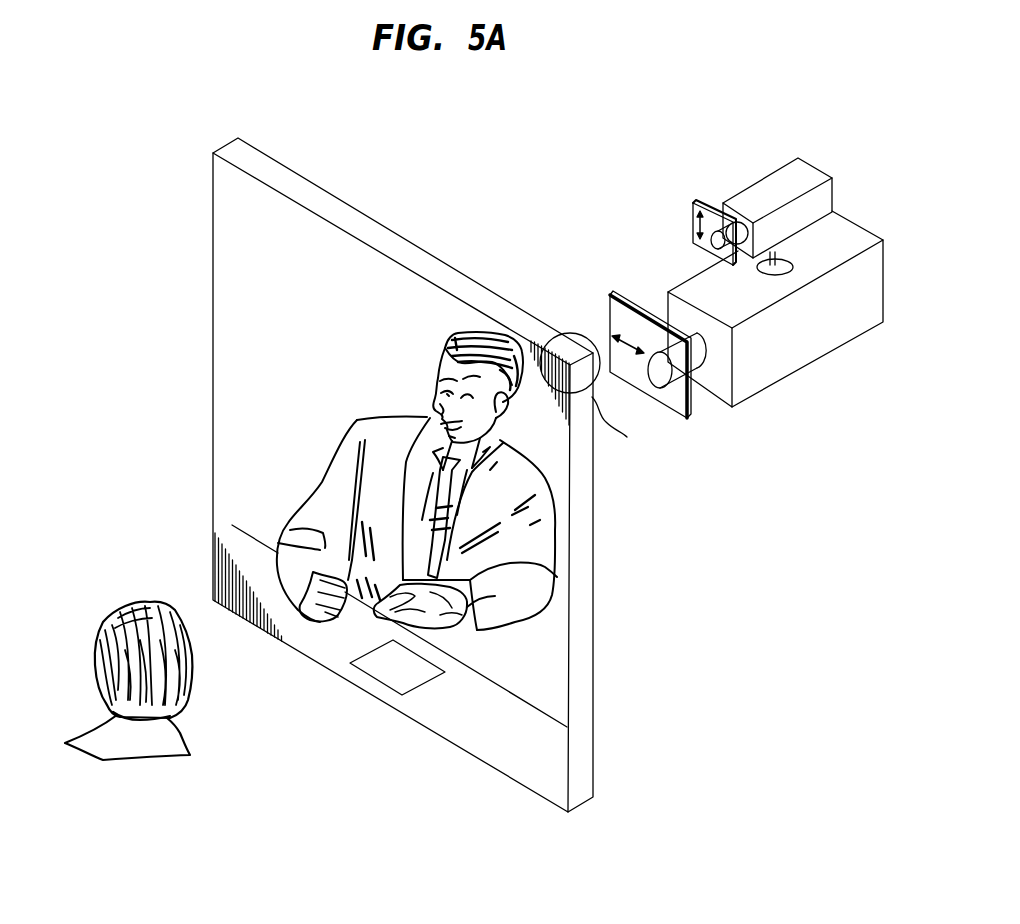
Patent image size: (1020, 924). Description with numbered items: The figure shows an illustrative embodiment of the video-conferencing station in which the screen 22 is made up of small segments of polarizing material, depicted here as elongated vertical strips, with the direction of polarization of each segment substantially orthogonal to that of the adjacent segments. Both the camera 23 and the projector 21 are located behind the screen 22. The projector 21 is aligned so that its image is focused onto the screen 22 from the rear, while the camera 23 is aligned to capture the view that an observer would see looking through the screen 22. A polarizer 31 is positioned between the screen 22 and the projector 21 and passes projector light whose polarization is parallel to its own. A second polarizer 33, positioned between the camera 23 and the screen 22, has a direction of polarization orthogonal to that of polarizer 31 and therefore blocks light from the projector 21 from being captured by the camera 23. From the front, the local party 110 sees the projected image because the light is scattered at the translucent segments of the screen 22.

The screen 22 is at (212, 218).
The projector 21 is at (760, 392).
The camera 23 is at (777, 172).
The polarizer 33 is at (696, 226).
The polarizer 31 is at (608, 320).
The local party 110 is at (103, 628).